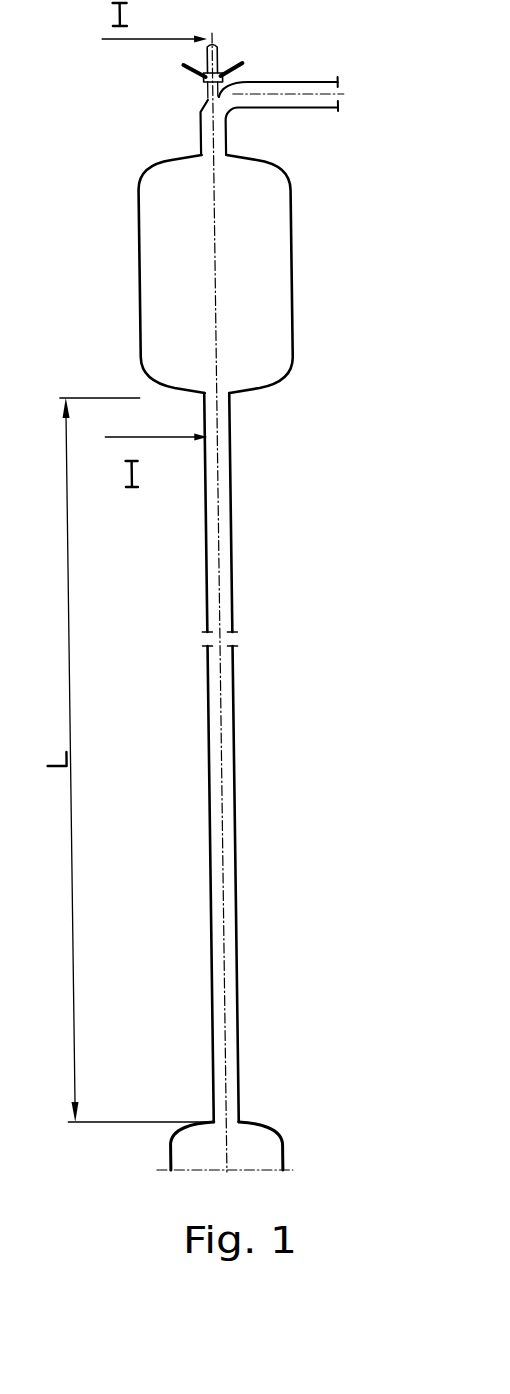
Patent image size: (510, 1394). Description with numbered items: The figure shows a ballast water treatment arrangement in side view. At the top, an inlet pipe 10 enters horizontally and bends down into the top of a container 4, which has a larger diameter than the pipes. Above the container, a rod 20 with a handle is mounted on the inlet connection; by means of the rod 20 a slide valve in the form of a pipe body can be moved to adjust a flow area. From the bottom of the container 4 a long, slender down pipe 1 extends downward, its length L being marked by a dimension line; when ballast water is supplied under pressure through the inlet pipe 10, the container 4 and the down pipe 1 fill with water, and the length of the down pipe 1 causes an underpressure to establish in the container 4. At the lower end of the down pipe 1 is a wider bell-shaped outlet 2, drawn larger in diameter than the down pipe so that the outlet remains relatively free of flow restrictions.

The down pipe 1 is at (220, 573).
The bell-shaped foot 2 is at (216, 1140).
The container 4 is at (277, 248).
The inlet pipe 10 is at (299, 90).
The rod 20 is at (206, 60).